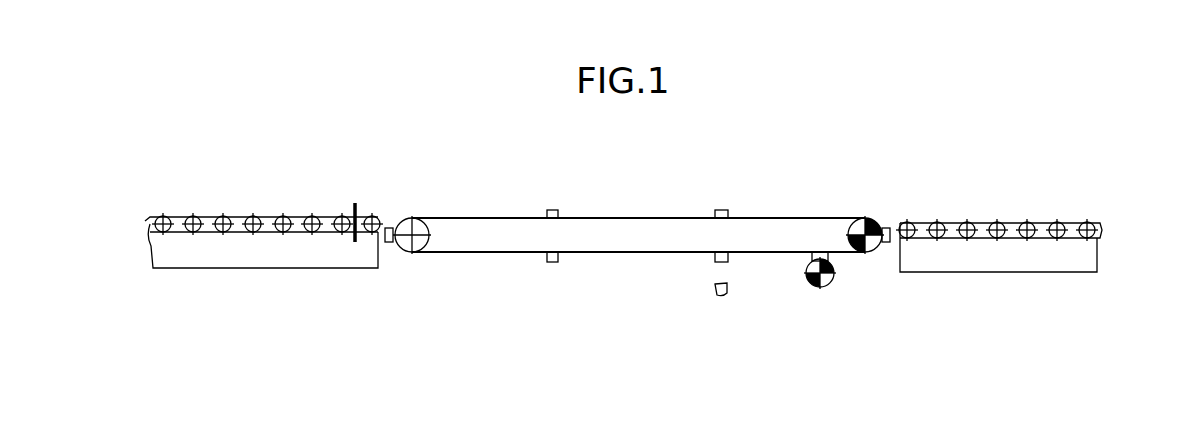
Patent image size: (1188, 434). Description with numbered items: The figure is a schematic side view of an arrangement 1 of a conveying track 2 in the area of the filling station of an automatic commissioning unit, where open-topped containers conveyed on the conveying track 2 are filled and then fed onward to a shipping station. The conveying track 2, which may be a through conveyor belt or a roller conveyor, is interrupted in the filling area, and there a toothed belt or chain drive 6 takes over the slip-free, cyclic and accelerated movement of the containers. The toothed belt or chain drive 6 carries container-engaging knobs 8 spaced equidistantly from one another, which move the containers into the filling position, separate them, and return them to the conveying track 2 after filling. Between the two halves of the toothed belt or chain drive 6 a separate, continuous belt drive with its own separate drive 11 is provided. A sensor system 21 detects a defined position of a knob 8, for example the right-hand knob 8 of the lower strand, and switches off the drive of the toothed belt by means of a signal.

The arrangement 1 is at (300, 134).
The conveying track 2 is at (168, 255).
The toothed belt or chain drive 6 is at (473, 257).
The container-engaging knobs 8 is at (388, 220).
The separate drive 11 is at (823, 280).
The sensor system 21 is at (715, 295).